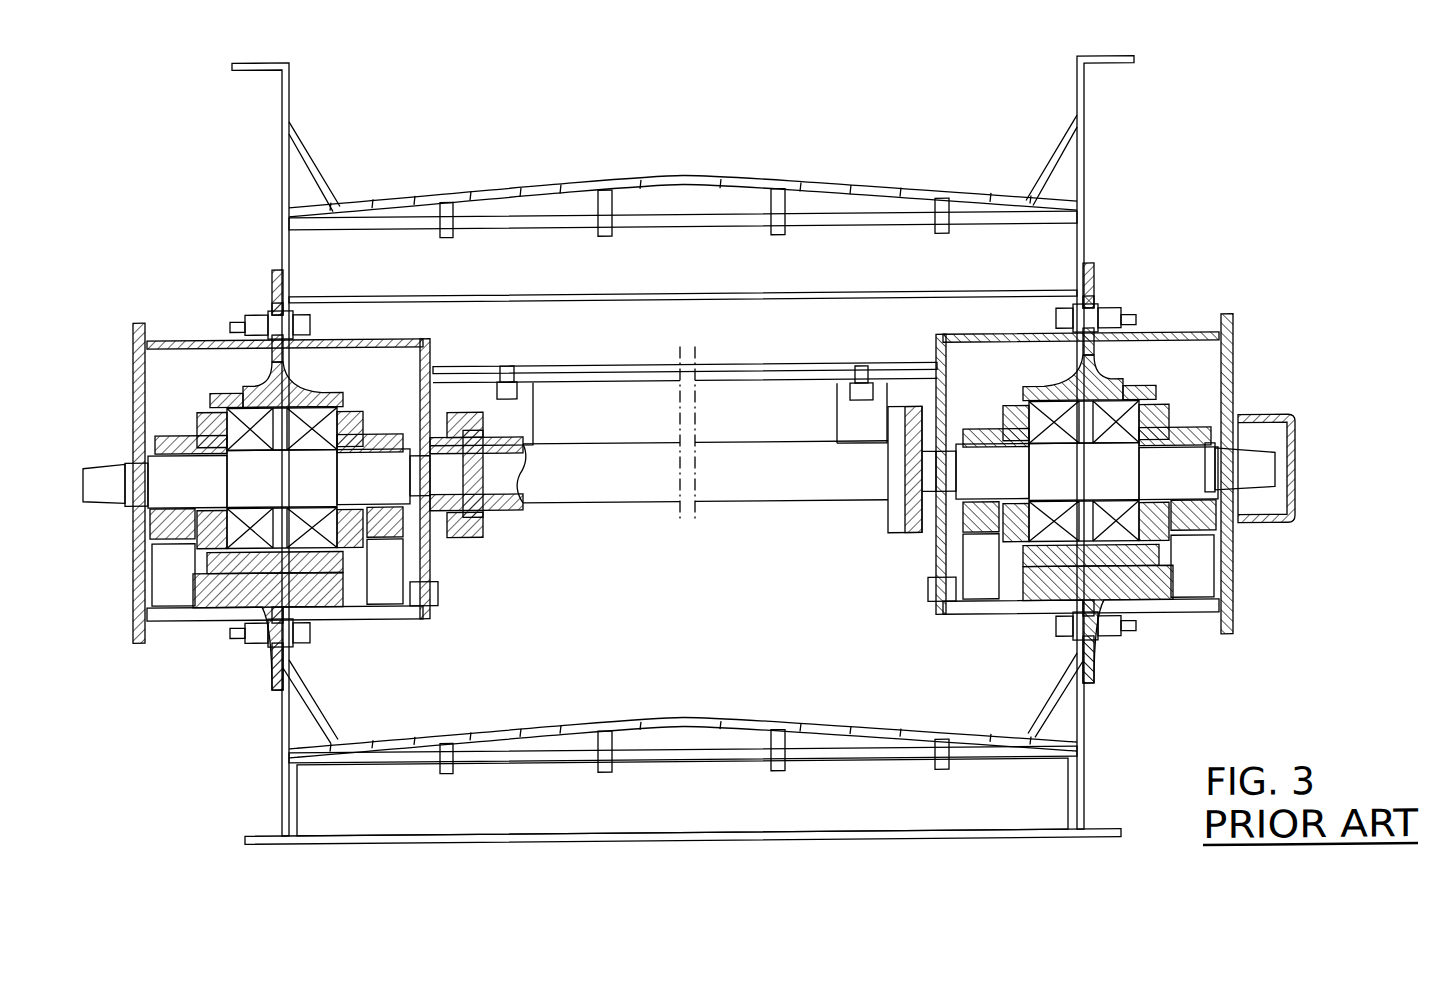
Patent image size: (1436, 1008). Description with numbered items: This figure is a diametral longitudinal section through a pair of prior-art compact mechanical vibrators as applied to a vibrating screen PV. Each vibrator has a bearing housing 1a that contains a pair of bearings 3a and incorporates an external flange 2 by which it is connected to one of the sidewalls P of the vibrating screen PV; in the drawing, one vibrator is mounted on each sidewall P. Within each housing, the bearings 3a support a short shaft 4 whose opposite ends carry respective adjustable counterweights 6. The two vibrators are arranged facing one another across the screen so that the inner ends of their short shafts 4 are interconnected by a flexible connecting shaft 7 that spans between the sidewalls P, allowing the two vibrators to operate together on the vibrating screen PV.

The bearing housing 1a is at (1113, 395).
The external flange 2 is at (310, 357).
The bearings 3a is at (1053, 440).
The short shaft 4 is at (273, 487).
The adjustable counterweights 6 is at (210, 587).
The flexible connecting shaft 7 is at (635, 462).
The sidewall P is at (1095, 287).
The vibrating screen PV is at (388, 770).